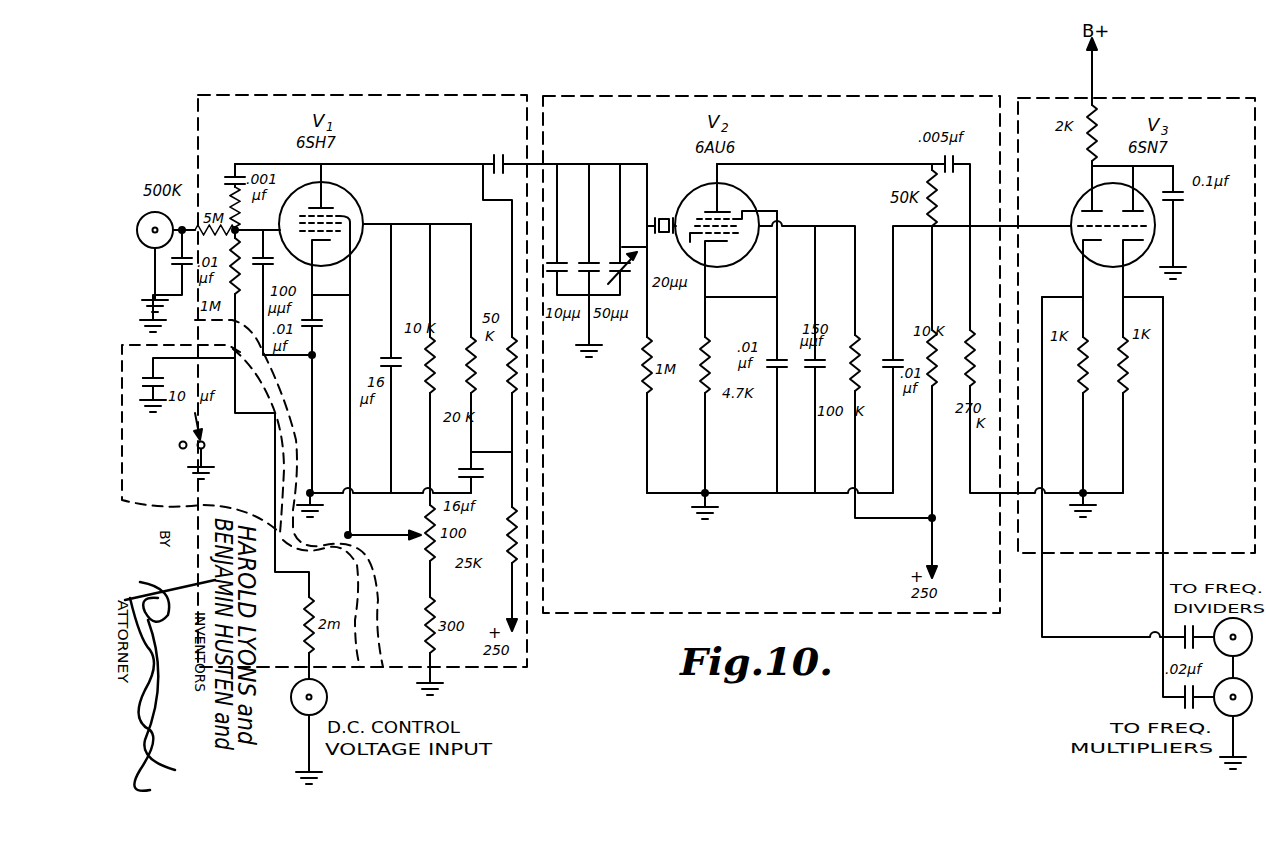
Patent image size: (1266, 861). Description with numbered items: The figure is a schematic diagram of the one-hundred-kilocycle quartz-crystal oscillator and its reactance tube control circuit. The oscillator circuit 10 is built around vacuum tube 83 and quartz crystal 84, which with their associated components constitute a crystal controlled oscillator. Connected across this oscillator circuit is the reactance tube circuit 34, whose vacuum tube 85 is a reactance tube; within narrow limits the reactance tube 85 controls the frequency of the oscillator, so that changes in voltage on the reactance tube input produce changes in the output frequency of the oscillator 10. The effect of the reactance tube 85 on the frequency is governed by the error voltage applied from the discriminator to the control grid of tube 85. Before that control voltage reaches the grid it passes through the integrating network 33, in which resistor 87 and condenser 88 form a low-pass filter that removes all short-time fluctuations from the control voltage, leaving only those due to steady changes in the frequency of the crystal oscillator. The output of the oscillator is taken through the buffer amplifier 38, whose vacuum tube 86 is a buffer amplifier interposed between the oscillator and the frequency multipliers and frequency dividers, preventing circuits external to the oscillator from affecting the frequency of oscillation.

The oscillator circuit 10 is at (858, 571).
The integrating network 33 is at (163, 493).
The reactance tube circuit 34 is at (481, 604).
The buffer amplifier 38 is at (1221, 313).
The vacuum tube 83 is at (762, 194).
The quartz crystal 84 is at (664, 214).
The reactance tube 85 is at (329, 349).
The vacuum tube 86 is at (1108, 235).
The resistor 87 is at (325, 642).
The condenser 88 is at (150, 380).